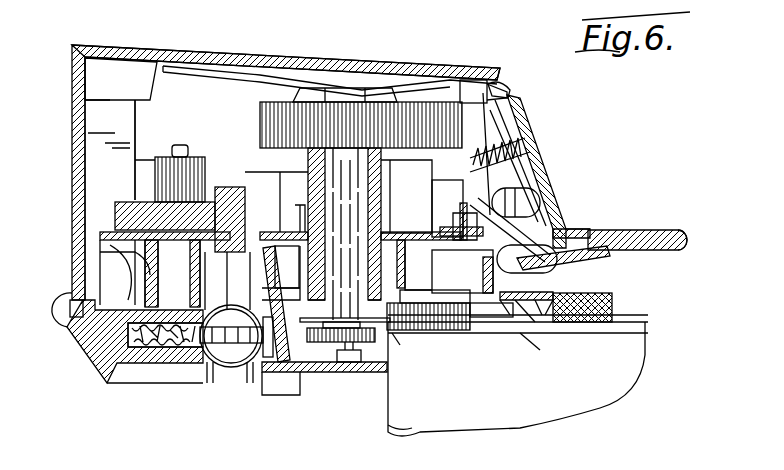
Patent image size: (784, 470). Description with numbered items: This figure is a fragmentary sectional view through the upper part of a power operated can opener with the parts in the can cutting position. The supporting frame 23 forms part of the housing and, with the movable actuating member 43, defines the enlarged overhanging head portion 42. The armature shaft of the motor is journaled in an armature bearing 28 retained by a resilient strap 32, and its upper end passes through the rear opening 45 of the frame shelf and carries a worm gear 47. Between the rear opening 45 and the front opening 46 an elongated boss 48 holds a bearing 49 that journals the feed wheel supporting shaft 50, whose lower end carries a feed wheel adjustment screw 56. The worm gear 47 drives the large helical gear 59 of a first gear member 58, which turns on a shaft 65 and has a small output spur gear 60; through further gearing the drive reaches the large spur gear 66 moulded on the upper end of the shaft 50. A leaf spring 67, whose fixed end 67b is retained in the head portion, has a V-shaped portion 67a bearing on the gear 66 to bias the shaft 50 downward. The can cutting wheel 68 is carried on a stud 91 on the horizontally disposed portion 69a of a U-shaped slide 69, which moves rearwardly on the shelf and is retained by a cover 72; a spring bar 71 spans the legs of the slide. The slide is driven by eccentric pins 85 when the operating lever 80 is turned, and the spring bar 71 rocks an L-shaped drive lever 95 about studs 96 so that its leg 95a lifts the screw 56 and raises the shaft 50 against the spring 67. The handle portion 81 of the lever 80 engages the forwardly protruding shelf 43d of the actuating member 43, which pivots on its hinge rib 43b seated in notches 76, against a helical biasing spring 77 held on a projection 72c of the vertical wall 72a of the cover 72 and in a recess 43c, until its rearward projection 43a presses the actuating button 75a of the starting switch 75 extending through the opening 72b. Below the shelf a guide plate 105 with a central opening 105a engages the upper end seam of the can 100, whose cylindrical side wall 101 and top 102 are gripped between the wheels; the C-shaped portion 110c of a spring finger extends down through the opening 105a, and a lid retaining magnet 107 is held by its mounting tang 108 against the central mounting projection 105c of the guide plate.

The supporting frame 23 is at (72, 143).
The armature bearing 28 is at (212, 345).
The resilient strap 32 is at (236, 370).
The head portion 42 is at (428, 66).
The movable actuating member 43 is at (568, 162).
The rearward projection 43a is at (545, 192).
The hinge rib 43b is at (510, 86).
The recess 43c is at (528, 132).
The forwardly protruding shelf 43d is at (602, 262).
The rear opening 45 is at (185, 262).
The front opening 46 is at (344, 235).
The worm gear 47 is at (235, 190).
The bearing supporting boss 48 is at (384, 188).
The bearing 49 is at (300, 184).
The feed wheel supporting shaft 50 is at (384, 168).
The feed wheel adjustment screw 56 is at (350, 365).
The first gear member 58 is at (152, 160).
The large helical gear 59 is at (135, 215).
The output spur gear 60 is at (200, 160).
The shaft 65 is at (182, 144).
The large spur gear 66 is at (265, 104).
The leaf spring 67 is at (312, 76).
The V-shaped portion 67a is at (367, 84).
The fixed end 67b is at (238, 70).
The can cutting wheel 68 is at (396, 325).
The slide 69 is at (303, 228).
The horizontally disposed portion 69a is at (452, 330).
The spring bar 71 is at (283, 273).
The cover 72 is at (112, 245).
The vertically extending wall 72a is at (462, 271).
The opening 72b is at (475, 231).
The projection 72c is at (532, 152).
The starting switch 75 is at (446, 195).
The actuating button 75a is at (542, 207).
The notches 76 is at (466, 80).
The helical biasing spring 77 is at (505, 104).
The operating lever 80 is at (688, 240).
The handle portion 81 is at (650, 232).
The eccentric pins 85 is at (76, 342).
The stud 91 is at (414, 265).
The L-shaped drive lever 95 is at (268, 242).
The leg 95a is at (322, 374).
The studs 96 is at (290, 385).
The can 100 is at (550, 419).
The cylindrical side wall 101 is at (410, 432).
The top 102 is at (646, 345).
The guide plate 105 is at (510, 322).
The central opening 105a is at (486, 335).
The central mounting projection 105c is at (548, 322).
The lid retaining magnet 107 is at (614, 305).
The mounting tang 108 is at (540, 352).
The C-shaped portion 110c is at (416, 368).